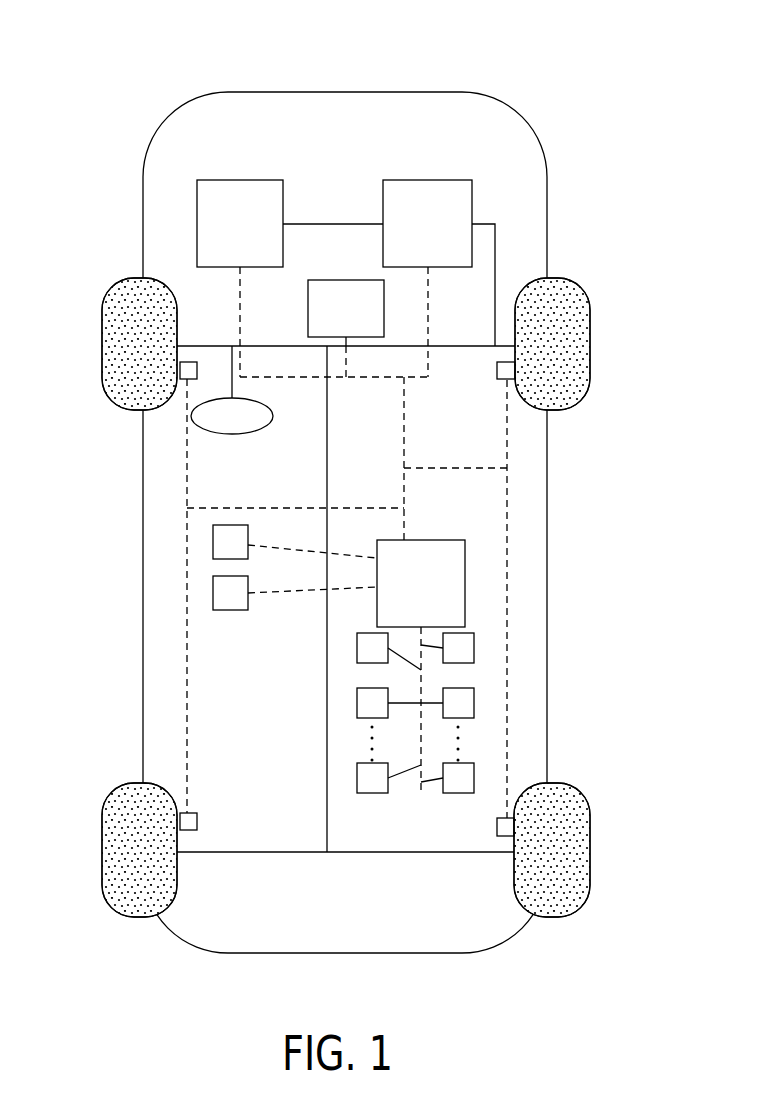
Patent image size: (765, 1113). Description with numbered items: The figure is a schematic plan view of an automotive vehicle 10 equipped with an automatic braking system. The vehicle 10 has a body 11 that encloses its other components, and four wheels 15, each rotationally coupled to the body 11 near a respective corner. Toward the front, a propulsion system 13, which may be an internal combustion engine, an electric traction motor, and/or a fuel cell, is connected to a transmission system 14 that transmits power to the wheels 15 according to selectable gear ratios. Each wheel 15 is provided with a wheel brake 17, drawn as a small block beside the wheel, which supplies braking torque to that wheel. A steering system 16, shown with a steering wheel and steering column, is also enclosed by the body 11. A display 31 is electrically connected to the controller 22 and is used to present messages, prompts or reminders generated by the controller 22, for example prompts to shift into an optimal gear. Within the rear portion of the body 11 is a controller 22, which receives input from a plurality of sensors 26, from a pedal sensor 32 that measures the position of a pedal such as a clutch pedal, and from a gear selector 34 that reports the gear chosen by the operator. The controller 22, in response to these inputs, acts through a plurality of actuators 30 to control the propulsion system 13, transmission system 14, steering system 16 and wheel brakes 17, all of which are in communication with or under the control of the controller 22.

The automotive vehicle 10 is at (592, 68).
The body 11 is at (547, 520).
The propulsion system 13 is at (240, 180).
The transmission system 14 is at (428, 180).
The wheels 15 is at (102, 345).
The steering system 16 is at (235, 434).
The wheel brakes 17 is at (190, 362).
The controller 22 is at (418, 540).
The plurality of sensors 26 is at (474, 648).
The plurality of actuators 30 is at (361, 633).
The display 31 is at (358, 323).
The pedal sensor 32 is at (241, 555).
The gear selector 34 is at (241, 606).